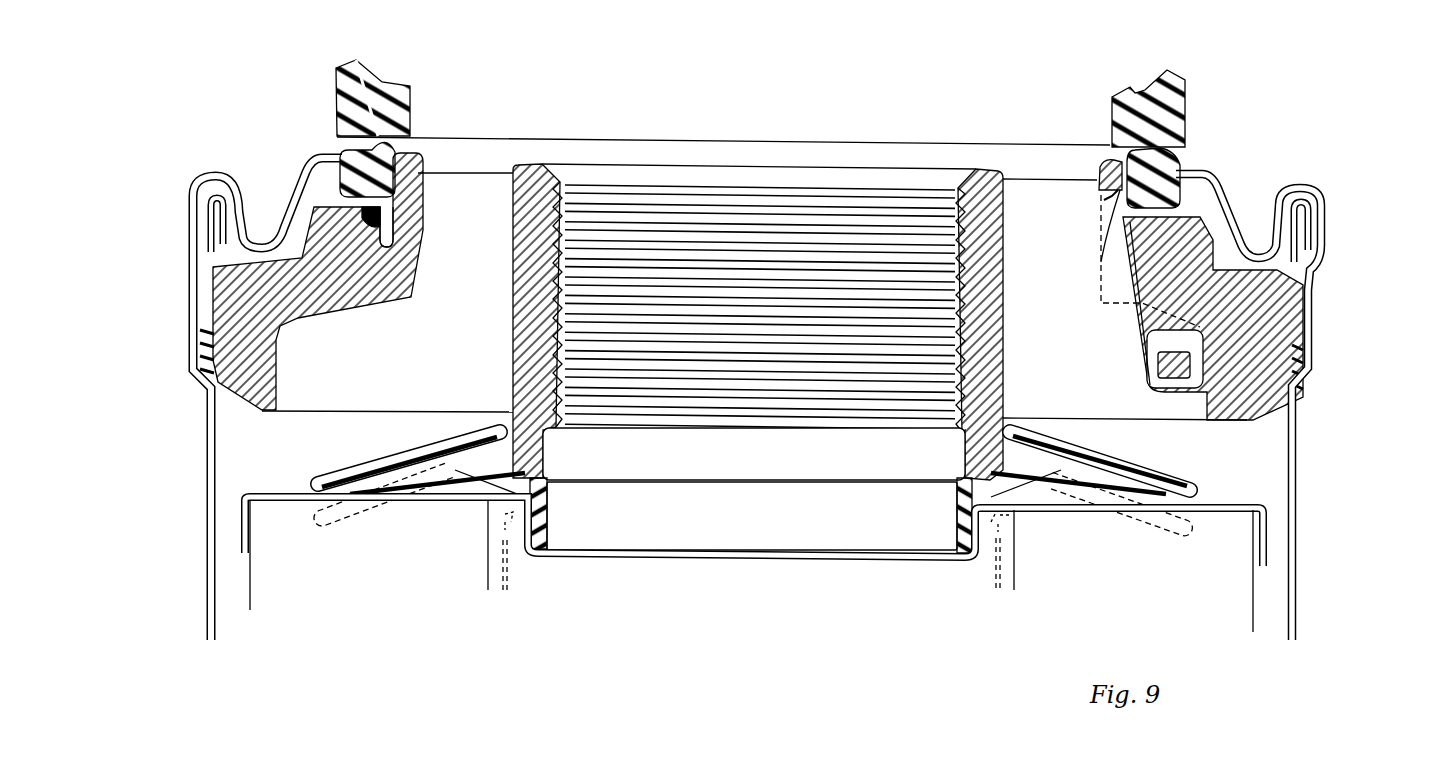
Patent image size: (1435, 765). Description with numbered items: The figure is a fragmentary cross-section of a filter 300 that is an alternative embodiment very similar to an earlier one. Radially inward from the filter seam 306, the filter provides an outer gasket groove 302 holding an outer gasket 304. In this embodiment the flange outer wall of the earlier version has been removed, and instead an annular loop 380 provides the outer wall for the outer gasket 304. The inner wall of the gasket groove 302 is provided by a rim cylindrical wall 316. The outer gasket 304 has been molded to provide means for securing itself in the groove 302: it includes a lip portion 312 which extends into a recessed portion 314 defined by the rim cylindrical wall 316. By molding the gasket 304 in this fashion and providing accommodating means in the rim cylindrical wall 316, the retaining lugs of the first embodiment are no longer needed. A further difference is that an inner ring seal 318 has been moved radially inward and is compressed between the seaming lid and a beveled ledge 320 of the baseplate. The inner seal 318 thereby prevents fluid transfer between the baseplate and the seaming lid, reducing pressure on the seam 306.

The filter 300 is at (183, 484).
The outer gasket groove 302 is at (383, 84).
The outer gasket 304 is at (363, 141).
The filter seam 306 is at (1345, 218).
The lip portion 312 is at (1103, 240).
The recessed portion 314 is at (1108, 197).
The rim cylindrical wall 316 is at (1117, 170).
The inner ring seal 318 is at (382, 222).
The beveled ledge 320 is at (372, 228).
The annular loop 380 is at (307, 163).